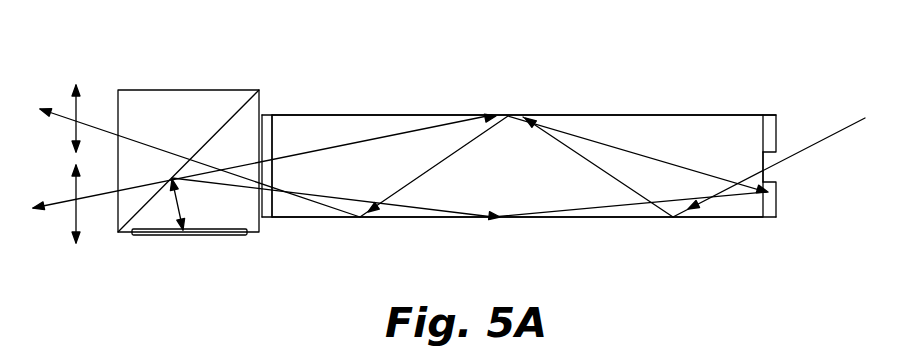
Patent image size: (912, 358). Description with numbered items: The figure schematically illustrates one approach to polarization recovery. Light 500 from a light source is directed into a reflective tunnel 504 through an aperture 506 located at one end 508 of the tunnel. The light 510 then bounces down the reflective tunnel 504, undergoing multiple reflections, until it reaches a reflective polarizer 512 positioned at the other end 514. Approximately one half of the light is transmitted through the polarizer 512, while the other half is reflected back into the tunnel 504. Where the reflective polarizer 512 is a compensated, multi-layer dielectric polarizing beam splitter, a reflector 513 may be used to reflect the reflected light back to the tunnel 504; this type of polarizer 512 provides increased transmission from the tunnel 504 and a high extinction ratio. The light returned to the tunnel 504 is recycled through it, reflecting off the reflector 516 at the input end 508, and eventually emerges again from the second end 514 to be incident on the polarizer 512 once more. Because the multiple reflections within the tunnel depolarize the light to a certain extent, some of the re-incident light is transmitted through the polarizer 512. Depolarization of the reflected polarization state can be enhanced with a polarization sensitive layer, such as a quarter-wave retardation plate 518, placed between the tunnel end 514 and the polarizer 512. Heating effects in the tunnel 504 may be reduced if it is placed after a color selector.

The light 500 is at (842, 125).
The reflective tunnel 504 is at (621, 115).
The aperture 506 is at (773, 172).
The end of tunnel 508 is at (770, 115).
The light 510 is at (368, 135).
The reflective polarizer 512 is at (179, 90).
The reflector 513 is at (166, 237).
The other end of tunnel 514 is at (274, 208).
The reflector 516 is at (730, 217).
The quarter-wave retardation plate 518 is at (268, 115).